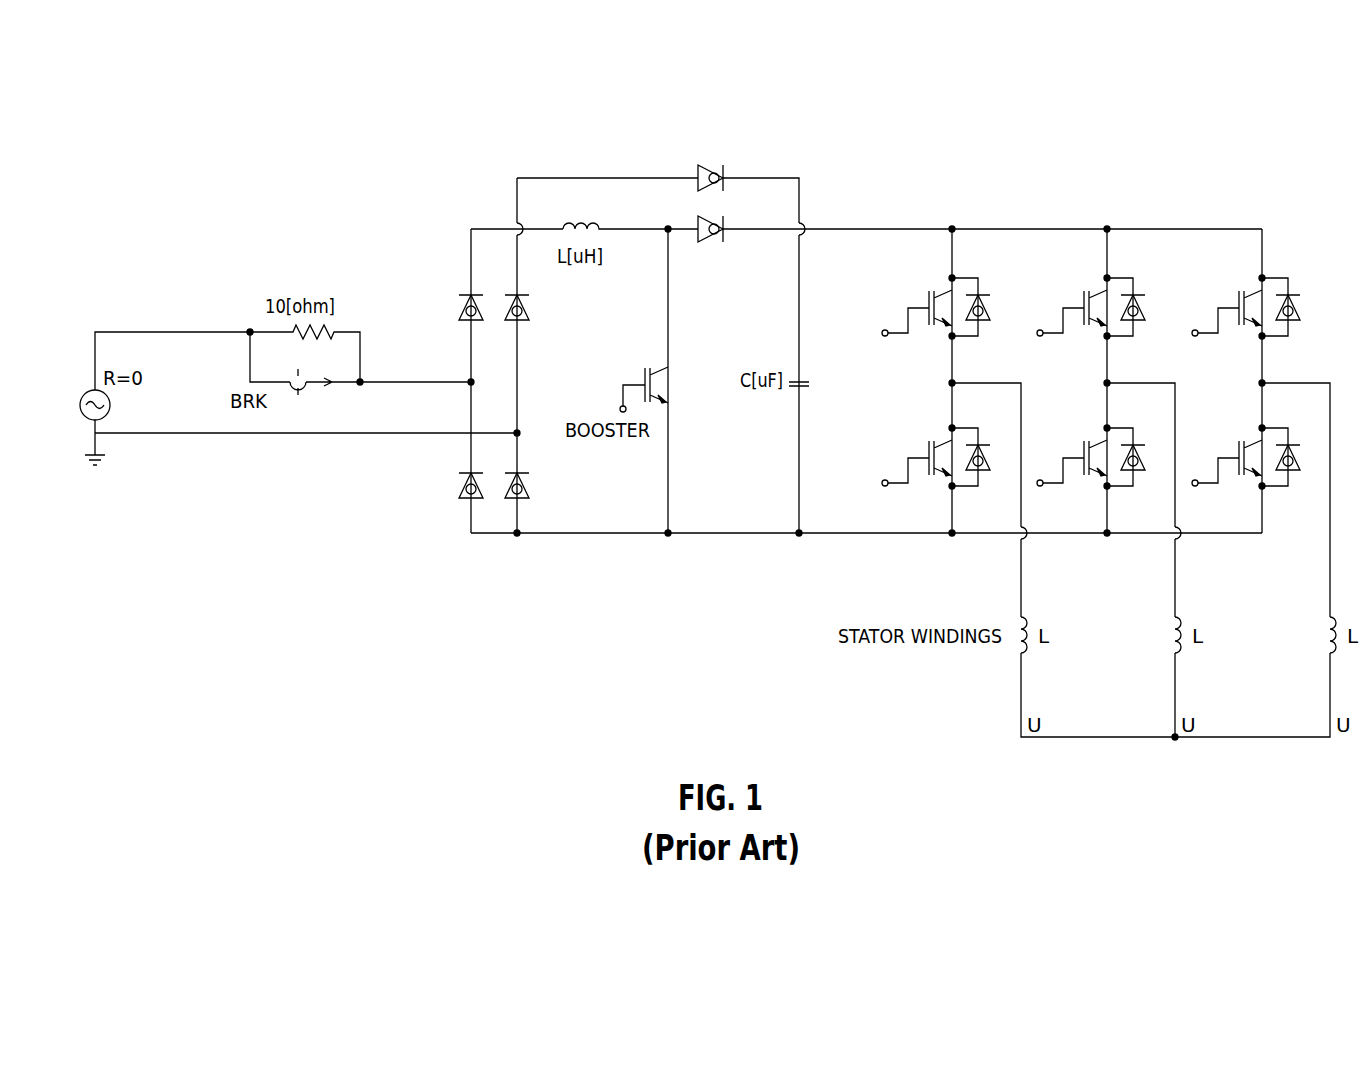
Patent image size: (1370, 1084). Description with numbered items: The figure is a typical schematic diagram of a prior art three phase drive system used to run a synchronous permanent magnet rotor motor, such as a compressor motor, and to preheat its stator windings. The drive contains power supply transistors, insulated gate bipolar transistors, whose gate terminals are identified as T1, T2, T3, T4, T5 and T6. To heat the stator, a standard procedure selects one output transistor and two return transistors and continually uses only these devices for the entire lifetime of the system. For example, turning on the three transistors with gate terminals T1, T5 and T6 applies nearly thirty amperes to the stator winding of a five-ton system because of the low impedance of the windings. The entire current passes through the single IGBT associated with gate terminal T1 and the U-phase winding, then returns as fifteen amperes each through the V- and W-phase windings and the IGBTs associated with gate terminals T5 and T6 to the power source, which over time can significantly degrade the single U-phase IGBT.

The gate terminal T1 is at (934, 307).
The gate terminal T2 is at (1089, 307).
The gate terminal T3 is at (1244, 307).
The gate terminal T4 is at (934, 457).
The gate terminal T5 is at (1089, 457).
The gate terminal T6 is at (1244, 457).